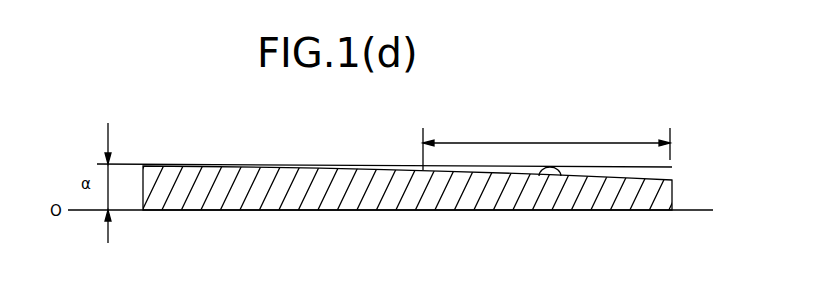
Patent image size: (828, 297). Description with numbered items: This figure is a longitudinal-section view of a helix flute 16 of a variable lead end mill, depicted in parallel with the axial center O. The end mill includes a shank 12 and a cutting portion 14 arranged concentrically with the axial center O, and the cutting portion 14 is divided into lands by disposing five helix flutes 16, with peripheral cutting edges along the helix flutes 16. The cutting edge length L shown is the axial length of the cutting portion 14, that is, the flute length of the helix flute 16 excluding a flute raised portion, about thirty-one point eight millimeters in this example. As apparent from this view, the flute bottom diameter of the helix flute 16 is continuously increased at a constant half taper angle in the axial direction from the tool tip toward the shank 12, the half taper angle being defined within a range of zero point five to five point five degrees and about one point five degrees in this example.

The shank 12 is at (266, 186).
The cutting portion 14 is at (606, 119).
The helix flute 16 is at (552, 171).